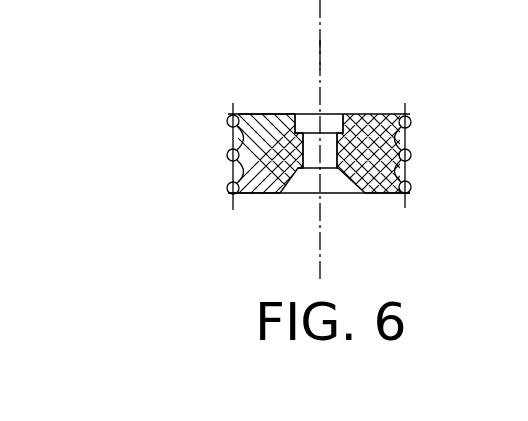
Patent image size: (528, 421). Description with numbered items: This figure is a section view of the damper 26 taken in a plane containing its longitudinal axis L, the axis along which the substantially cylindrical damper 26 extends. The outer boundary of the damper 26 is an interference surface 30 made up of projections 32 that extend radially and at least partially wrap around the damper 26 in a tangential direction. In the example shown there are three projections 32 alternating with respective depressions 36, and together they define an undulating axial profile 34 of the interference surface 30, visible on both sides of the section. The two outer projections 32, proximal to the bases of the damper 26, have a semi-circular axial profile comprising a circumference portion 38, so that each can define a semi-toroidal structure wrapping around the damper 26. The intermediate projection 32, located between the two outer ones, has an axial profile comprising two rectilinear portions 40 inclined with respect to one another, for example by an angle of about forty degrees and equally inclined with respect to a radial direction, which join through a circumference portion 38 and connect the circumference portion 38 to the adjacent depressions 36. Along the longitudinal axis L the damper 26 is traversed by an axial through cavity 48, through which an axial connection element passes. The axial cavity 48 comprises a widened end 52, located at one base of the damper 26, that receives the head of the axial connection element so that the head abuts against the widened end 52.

The damper 26 is at (377, 105).
The longitudinal axis L is at (322, 58).
The interference surface 30 is at (221, 194).
The projection 32 is at (229, 120).
The undulating axial profile 34 is at (232, 196).
The depression 36 is at (236, 140).
The circumference portion 38 is at (410, 195).
The rectilinear portion 40 is at (261, 113).
The axial through cavity 48 is at (300, 170).
The widened end 52 is at (305, 113).